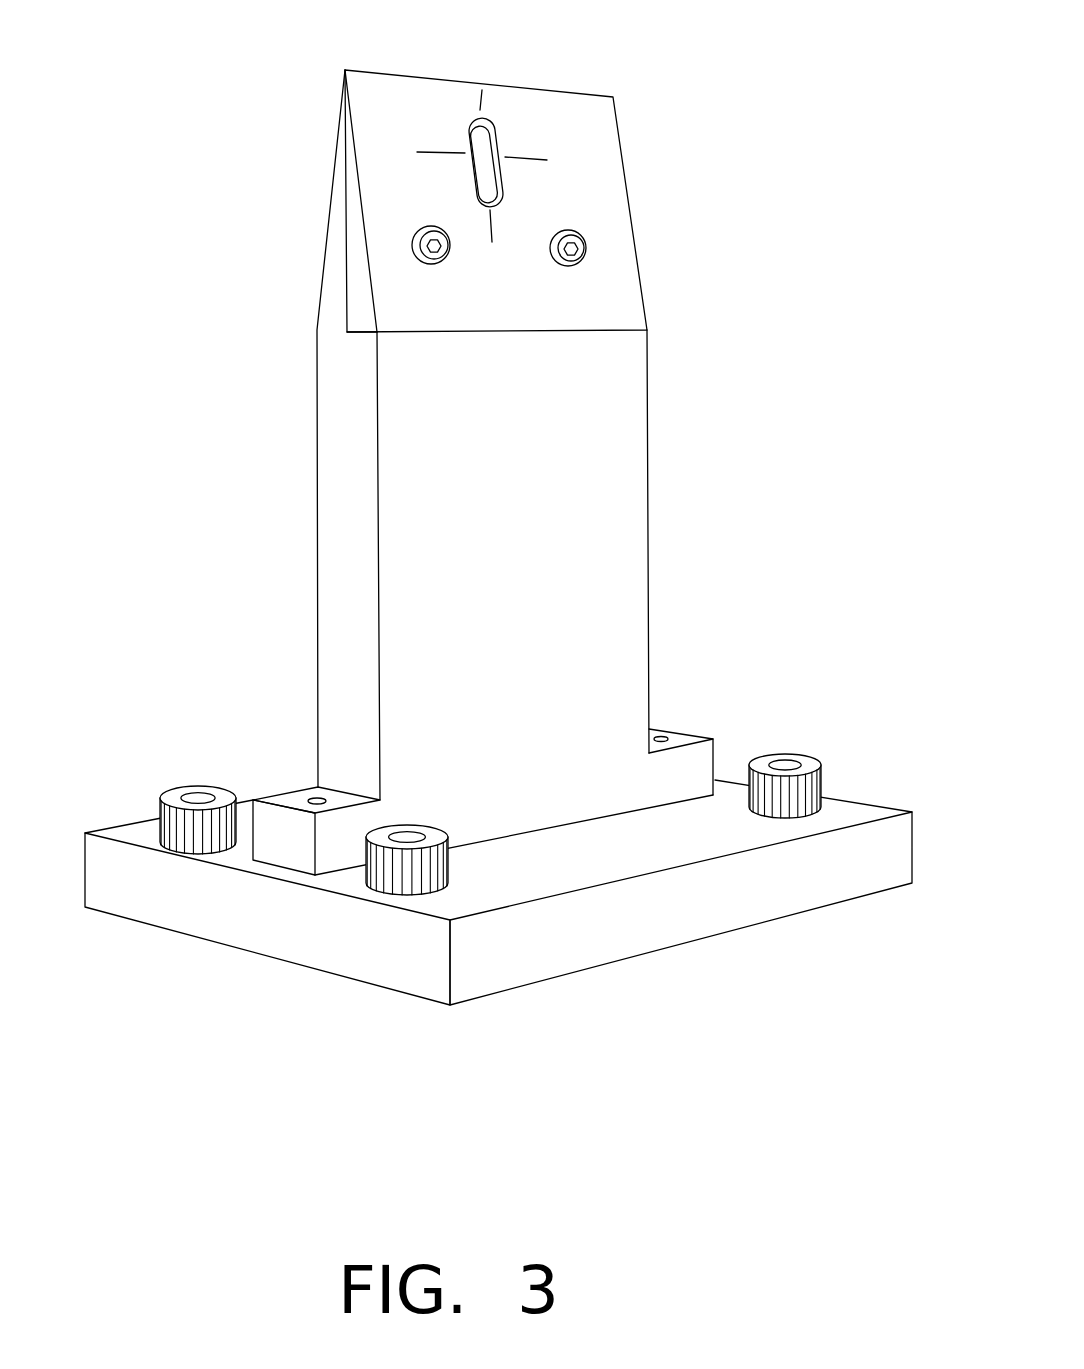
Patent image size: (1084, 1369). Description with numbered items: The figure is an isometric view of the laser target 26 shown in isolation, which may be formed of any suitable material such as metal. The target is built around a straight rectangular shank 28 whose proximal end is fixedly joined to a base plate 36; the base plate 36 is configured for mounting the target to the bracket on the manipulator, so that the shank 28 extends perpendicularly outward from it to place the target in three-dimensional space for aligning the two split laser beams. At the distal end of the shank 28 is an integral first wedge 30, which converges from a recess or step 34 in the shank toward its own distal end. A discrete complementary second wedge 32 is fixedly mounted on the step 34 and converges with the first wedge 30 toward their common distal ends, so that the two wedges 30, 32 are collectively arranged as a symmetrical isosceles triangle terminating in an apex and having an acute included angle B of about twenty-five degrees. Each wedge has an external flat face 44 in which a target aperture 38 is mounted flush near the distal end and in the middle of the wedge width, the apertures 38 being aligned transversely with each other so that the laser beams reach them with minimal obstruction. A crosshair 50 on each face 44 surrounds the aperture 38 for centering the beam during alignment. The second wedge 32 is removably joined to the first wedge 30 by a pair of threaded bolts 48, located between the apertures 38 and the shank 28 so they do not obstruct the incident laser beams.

The laser target 26 is at (517, 455).
The shank 28 is at (531, 558).
The first wedge 30 is at (338, 138).
The second wedge 32 is at (623, 160).
The step 34 is at (364, 328).
The base plate 36 is at (857, 800).
The target aperture 38 is at (479, 116).
The external flat face 44 is at (600, 207).
The threaded bolt 48 is at (583, 247).
The crosshair 50 is at (444, 147).
The included angle B is at (428, 202).